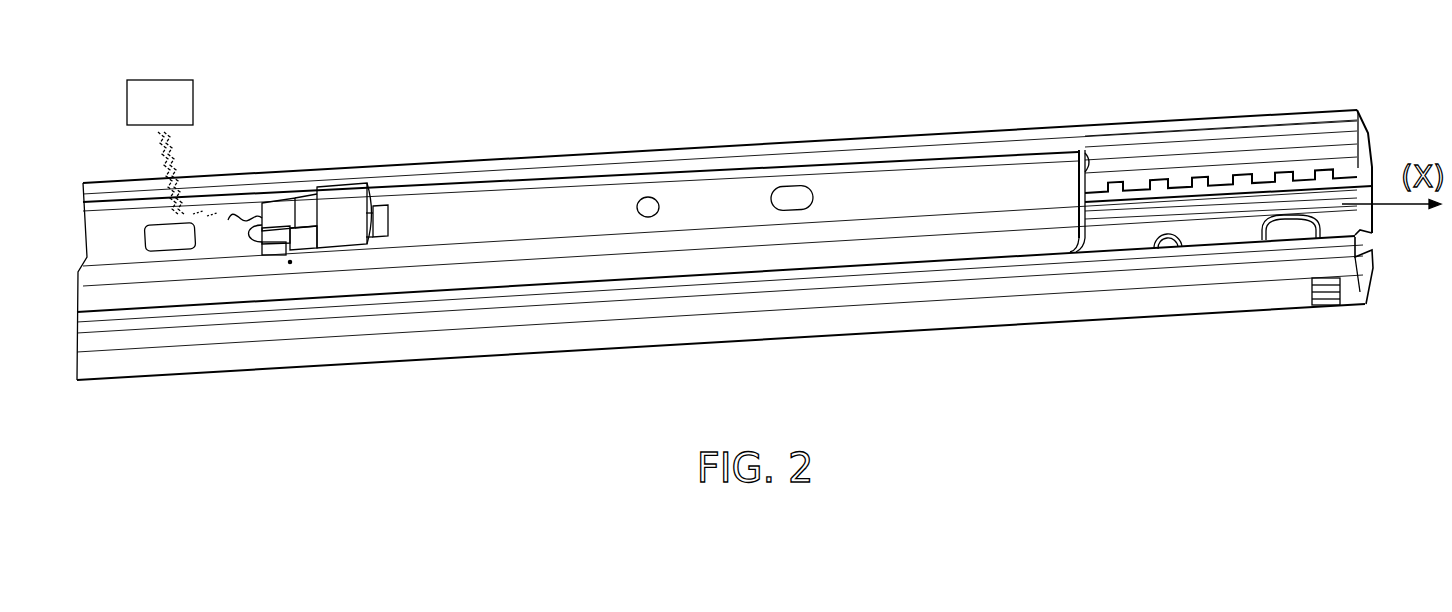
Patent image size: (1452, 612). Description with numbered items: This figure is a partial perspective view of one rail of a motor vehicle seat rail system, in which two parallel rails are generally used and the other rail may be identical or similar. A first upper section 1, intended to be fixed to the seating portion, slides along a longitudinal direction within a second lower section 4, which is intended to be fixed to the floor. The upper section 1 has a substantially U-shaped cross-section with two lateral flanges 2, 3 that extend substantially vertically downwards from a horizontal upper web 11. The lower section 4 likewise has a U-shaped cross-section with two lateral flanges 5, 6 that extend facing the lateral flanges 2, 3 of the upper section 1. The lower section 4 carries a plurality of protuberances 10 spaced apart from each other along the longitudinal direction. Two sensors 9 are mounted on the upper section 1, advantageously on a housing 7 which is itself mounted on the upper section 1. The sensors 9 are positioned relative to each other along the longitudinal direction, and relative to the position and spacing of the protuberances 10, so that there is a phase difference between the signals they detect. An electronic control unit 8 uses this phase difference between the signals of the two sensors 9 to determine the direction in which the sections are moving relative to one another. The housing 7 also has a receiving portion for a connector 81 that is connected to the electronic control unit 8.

The first upper section 1 is at (482, 212).
The lateral flange 2 is at (725, 170).
The lateral flange 3 is at (725, 260).
The second lower section 4 is at (1180, 222).
The lateral flange 5 is at (1288, 128).
The lateral flange 6 is at (1282, 258).
The housing 7 is at (336, 198).
The electronic control unit 8 is at (164, 80).
The connector 81 is at (278, 210).
The sensor 9 is at (289, 267).
The protuberances 10 is at (1260, 177).
The horizontal upper web 11 is at (921, 186).